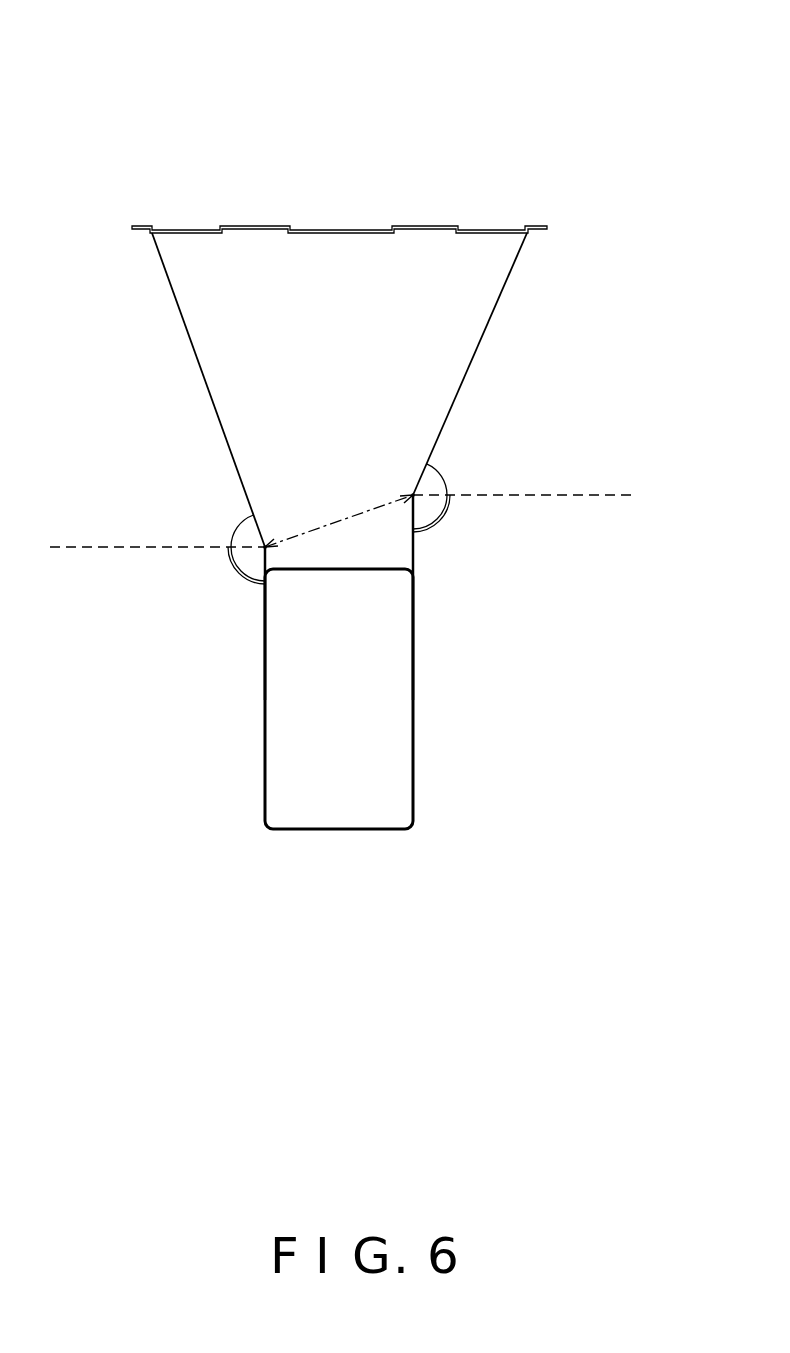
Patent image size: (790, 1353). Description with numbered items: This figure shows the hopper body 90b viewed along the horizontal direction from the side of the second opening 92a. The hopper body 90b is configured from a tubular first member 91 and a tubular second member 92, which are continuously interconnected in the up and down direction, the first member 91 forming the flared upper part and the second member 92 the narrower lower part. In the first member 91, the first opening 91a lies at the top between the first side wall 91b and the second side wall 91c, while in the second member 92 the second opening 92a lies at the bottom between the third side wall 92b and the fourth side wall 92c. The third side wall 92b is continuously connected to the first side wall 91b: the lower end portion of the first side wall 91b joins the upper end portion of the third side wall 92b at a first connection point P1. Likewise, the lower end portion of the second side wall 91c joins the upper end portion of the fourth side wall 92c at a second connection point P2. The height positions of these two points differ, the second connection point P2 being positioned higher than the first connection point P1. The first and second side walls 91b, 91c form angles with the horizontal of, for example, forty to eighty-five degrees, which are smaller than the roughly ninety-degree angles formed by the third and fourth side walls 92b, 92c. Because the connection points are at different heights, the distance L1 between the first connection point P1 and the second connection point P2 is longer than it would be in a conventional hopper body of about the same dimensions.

The hopper body 90b is at (200, 112).
The first member 91 is at (630, 233).
The first opening 91a is at (355, 232).
The first side wall 91b is at (194, 353).
The second side wall 91c is at (478, 352).
The second member 92 is at (630, 497).
The second opening 92a is at (335, 803).
The third side wall 92b is at (265, 711).
The fourth side wall 92c is at (415, 698).
The first connection point P1 is at (265, 547).
The second connection point P2 is at (413, 495).
The distance between the first connection point and the second connection point L1 is at (339, 516).